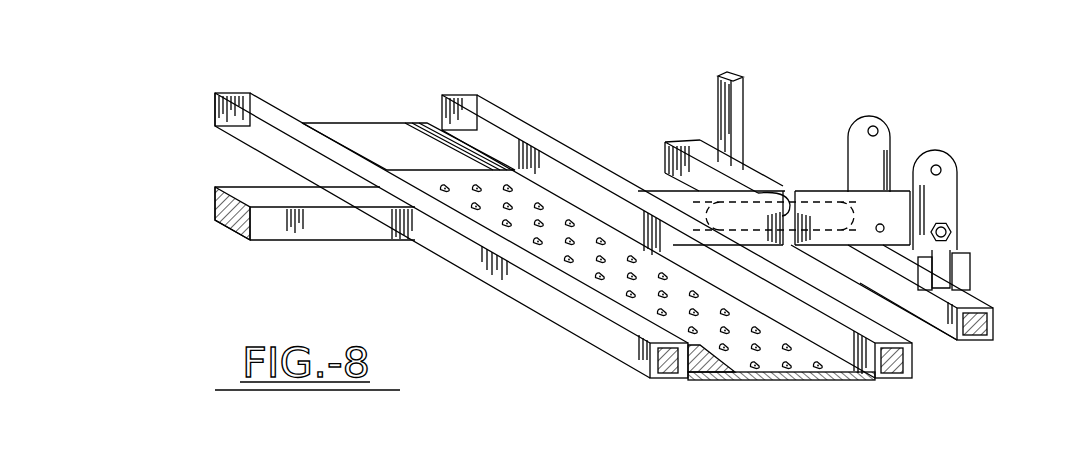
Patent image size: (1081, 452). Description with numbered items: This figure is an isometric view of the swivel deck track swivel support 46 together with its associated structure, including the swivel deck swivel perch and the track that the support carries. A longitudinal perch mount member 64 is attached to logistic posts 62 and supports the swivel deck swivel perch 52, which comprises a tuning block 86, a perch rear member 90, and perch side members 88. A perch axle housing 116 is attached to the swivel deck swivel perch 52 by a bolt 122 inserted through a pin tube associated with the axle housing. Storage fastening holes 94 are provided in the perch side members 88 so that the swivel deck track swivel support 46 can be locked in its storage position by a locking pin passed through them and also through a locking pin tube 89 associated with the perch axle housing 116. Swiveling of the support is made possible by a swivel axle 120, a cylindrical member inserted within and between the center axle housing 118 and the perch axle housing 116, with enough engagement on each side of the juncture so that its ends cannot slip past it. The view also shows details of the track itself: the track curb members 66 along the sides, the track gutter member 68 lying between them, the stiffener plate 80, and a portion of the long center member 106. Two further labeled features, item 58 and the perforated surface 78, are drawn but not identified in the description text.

The swivel deck track swivel support 46 is at (248, 182).
The swivel deck swivel perch 52 is at (912, 300).
The support 58 is at (303, 448).
The logistic posts 62 is at (745, 85).
The longitudinal perch mount member 64 is at (995, 325).
The track curb members 66 is at (663, 380).
The track gutter member 68 is at (780, 378).
The perforated plate 78 is at (797, 374).
The stiffener plate 80 is at (413, 132).
The tuning block 86 is at (878, 257).
The perch side members 88 is at (867, 120).
The locking pin tube 89 is at (876, 224).
The perch rear member 90 is at (972, 262).
The storage fastening holes 94 is at (940, 163).
The long center member 106 is at (337, 232).
The perch axle housing 116 is at (897, 193).
The center axle housing 118 is at (667, 195).
The swivel axle 120 is at (738, 193).
The bolt 122 is at (947, 228).